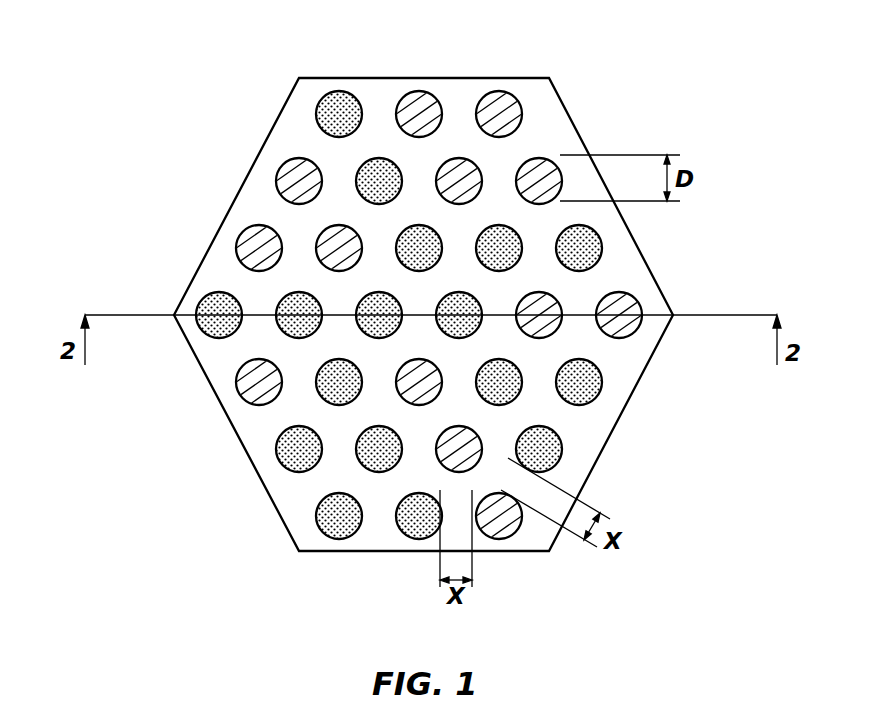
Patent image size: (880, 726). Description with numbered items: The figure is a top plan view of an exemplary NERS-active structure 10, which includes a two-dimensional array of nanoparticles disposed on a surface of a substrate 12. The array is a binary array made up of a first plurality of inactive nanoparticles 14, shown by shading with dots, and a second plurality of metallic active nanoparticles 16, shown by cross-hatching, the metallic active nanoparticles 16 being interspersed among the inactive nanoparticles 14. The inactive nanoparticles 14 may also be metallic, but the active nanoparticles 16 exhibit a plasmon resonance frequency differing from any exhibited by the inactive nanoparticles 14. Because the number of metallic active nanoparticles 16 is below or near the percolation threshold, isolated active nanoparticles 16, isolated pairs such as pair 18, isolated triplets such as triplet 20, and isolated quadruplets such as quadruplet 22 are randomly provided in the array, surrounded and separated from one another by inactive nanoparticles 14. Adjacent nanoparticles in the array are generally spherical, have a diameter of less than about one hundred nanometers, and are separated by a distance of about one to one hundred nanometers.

The NERS-active structure 10 is at (418, 298).
The substrate 12 is at (239, 192).
The inactive nanoparticles 14 is at (277, 450).
The metallic active nanoparticles 16 is at (248, 388).
The pair 18 is at (553, 328).
The triplet 20 is at (332, 257).
The quadruplet 22 is at (428, 97).